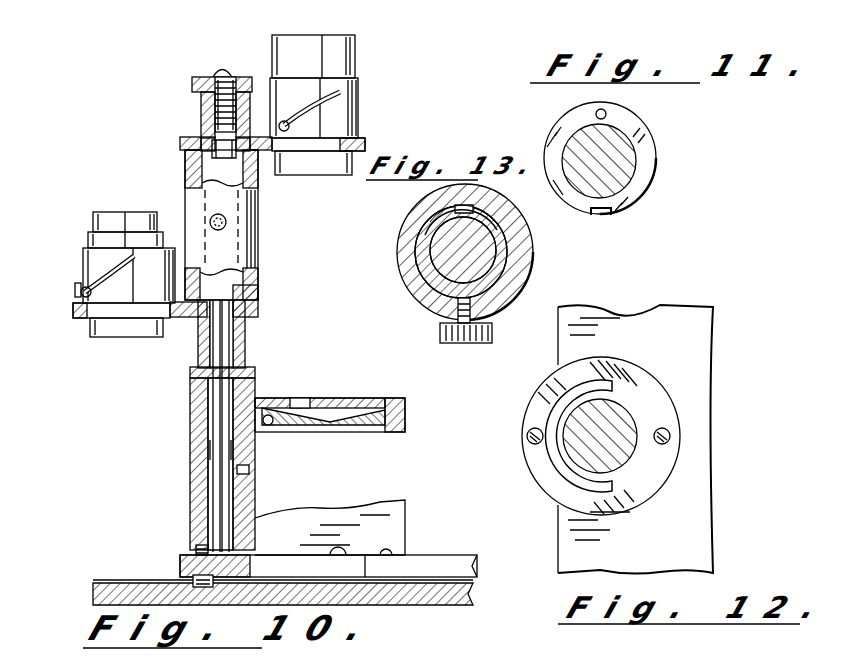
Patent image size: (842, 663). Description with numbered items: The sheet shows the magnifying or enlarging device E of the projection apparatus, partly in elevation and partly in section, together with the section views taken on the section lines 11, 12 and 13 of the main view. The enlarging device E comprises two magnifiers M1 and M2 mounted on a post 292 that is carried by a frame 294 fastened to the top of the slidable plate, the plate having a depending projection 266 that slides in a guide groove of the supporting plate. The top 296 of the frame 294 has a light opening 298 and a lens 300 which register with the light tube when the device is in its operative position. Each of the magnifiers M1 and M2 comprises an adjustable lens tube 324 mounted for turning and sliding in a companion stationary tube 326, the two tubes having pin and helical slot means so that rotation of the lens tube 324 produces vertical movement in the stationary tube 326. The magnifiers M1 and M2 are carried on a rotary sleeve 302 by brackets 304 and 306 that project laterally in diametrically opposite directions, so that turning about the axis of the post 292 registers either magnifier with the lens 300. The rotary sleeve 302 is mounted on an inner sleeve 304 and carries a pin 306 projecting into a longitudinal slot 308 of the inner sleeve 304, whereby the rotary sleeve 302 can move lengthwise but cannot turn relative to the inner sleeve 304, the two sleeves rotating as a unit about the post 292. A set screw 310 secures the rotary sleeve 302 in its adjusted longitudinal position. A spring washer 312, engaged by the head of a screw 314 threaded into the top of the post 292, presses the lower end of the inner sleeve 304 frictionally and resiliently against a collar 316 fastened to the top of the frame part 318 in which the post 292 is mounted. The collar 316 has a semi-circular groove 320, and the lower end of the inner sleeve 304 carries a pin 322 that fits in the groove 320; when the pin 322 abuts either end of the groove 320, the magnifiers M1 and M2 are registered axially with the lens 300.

In FIG. 10, the enlarging device E is at (136, 122).
In FIG. 10, the magnifier M1 is at (360, 62).
In FIG. 10, the magnifier M2 is at (72, 256).
In FIG. 10, the depending projection 266 is at (190, 582).
In FIG. 10, the post 292 is at (212, 438).
In FIG. 11, the post 292 is at (632, 166).
In FIG. 13, the post 292 is at (430, 288).
In FIG. 12, the post 292 is at (667, 410).
In FIG. 10, the frame 294 is at (405, 524).
In FIG. 12, the frame 294 is at (716, 504).
In FIG. 10, the top of frame 296 is at (404, 406).
In FIG. 10, the light opening 298 is at (332, 400).
In FIG. 10, the lens 300 is at (325, 424).
In FIG. 10, the rotary sleeve 302 is at (256, 284).
In FIG. 13, the rotary sleeve 302 is at (528, 292).
In FIG. 10, the inner sleeve 304 is at (362, 140).
In FIG. 11, the inner sleeve 304 is at (657, 150).
In FIG. 13, the inner sleeve 304 is at (505, 258).
In FIG. 10, the pin 306 is at (78, 316).
In FIG. 13, the pin 306 is at (430, 220).
In FIG. 11, the longitudinal slot 308 is at (603, 218).
In FIG. 13, the longitudinal slot 308 is at (473, 209).
In FIG. 10, the set screw 310 is at (226, 230).
In FIG. 13, the set screw 310 is at (440, 336).
In FIG. 10, the spring washer 312 is at (200, 79).
In FIG. 10, the screw 314 is at (220, 70).
In FIG. 10, the collar 316 is at (186, 378).
In FIG. 12, the collar 316 is at (645, 392).
In FIG. 10, the frame part 318 is at (202, 476).
In FIG. 12, the semi-circular groove 320 is at (558, 450).
In FIG. 11, the pin 322 is at (606, 116).
In FIG. 10, the adjustable lens tube 324 is at (120, 240).
In FIG. 10, the stationary tube 326 is at (100, 262).
In FIG. 10, the section line 11 is at (136, 368).
In FIG. 10, the section line 12 is at (330, 370).
In FIG. 10, the section line 13 is at (292, 222).